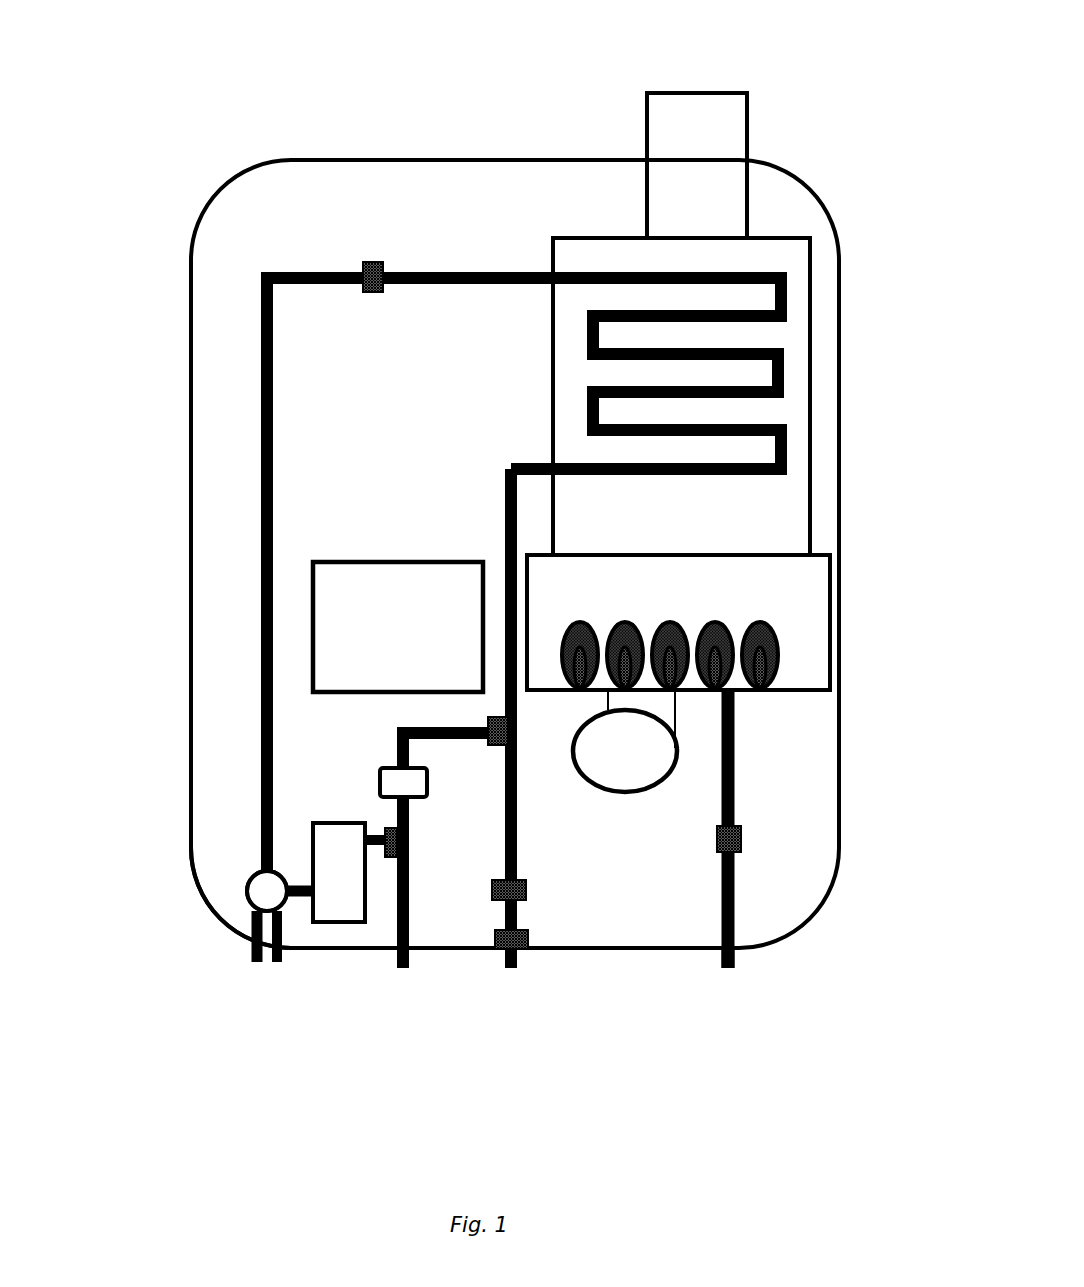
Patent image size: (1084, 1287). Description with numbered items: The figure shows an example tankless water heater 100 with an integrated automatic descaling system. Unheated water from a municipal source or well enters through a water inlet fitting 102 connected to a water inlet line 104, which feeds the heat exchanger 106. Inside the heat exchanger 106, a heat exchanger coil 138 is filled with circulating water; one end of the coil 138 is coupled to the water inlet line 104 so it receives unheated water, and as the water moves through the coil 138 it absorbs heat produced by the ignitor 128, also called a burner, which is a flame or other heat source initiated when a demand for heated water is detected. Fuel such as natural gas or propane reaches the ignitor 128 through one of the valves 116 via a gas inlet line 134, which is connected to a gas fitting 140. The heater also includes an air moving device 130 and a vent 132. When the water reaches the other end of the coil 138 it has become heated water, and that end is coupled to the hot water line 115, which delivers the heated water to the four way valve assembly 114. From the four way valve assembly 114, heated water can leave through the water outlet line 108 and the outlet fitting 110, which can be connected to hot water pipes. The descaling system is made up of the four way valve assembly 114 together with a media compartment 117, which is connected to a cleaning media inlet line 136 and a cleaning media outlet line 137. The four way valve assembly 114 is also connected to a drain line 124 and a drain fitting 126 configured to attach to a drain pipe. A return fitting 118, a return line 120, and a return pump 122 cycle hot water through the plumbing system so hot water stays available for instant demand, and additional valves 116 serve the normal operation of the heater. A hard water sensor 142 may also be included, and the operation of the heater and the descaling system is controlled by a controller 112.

The tankless water heater 100 is at (445, 63).
The water inlet fitting 102 is at (519, 974).
The water inlet line 104 is at (519, 842).
The heat exchanger 106 is at (788, 253).
The water outlet line 108 is at (236, 929).
The outlet fitting 110 is at (250, 957).
The controller 112 is at (350, 636).
The four way valve assembly 114 is at (243, 895).
The hot water line 115 is at (260, 336).
The valves 116 is at (358, 271).
The media compartment 117 is at (310, 867).
The return fitting 118 is at (404, 967).
The return line 120 is at (412, 902).
The return pump 122 is at (378, 774).
The drain line 124 is at (284, 965).
The drain fitting 126 is at (281, 964).
The ignitor 128 is at (822, 606).
The air moving device 130 is at (682, 745).
The vent 132 is at (683, 128).
The gas inlet line 134 is at (740, 887).
The cleaning media inlet line 136 is at (245, 886).
The cleaning media outlet line 137 is at (376, 852).
The heat exchanger coil 138 is at (785, 374).
The gas fitting 140 is at (737, 970).
The hard water sensor 142 is at (532, 902).